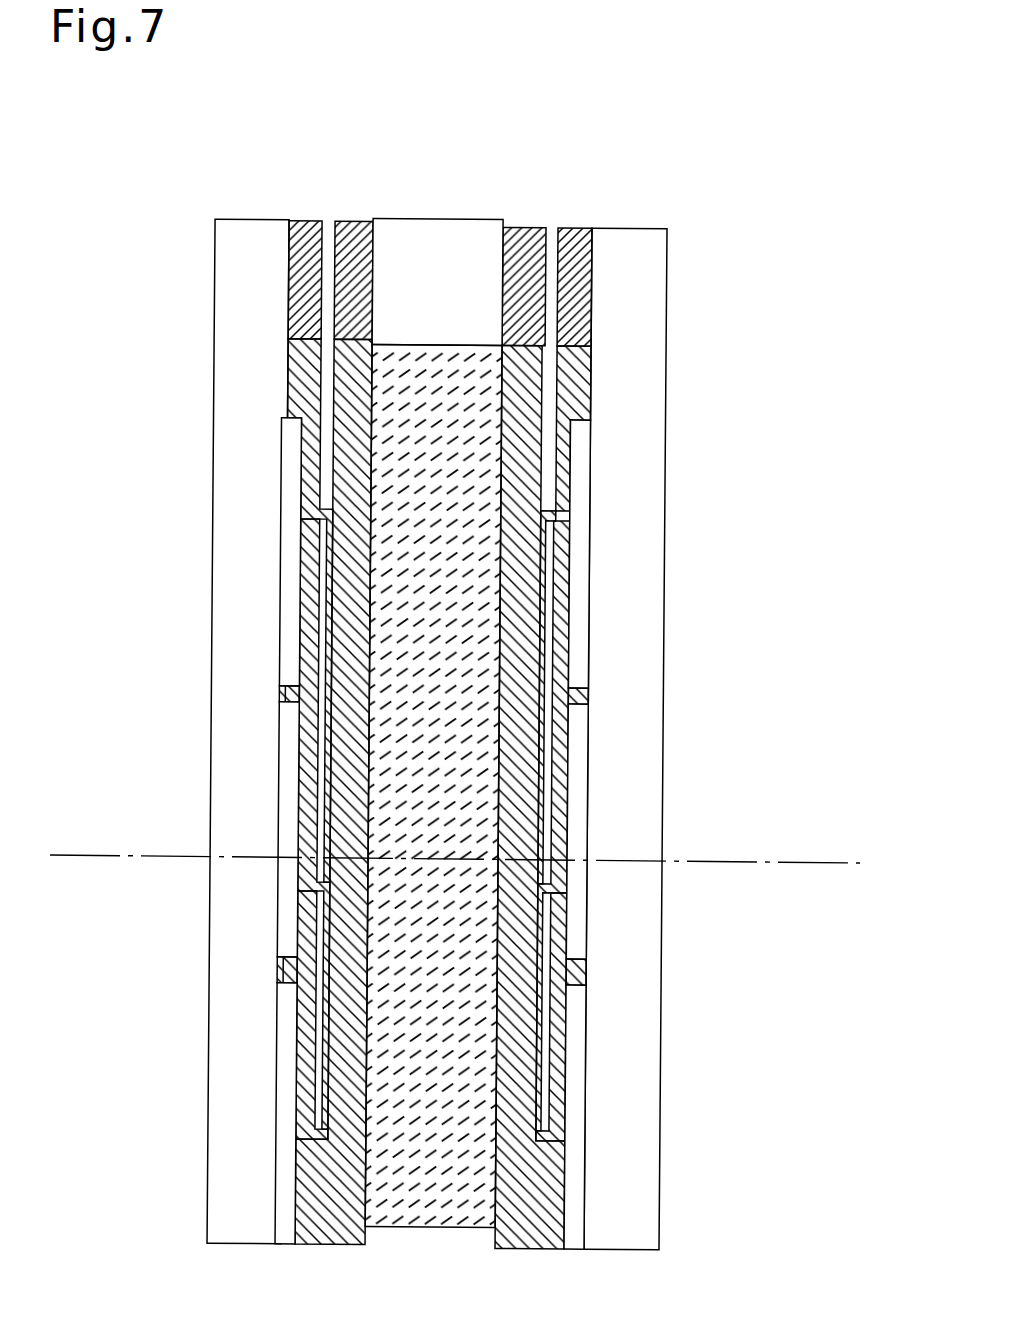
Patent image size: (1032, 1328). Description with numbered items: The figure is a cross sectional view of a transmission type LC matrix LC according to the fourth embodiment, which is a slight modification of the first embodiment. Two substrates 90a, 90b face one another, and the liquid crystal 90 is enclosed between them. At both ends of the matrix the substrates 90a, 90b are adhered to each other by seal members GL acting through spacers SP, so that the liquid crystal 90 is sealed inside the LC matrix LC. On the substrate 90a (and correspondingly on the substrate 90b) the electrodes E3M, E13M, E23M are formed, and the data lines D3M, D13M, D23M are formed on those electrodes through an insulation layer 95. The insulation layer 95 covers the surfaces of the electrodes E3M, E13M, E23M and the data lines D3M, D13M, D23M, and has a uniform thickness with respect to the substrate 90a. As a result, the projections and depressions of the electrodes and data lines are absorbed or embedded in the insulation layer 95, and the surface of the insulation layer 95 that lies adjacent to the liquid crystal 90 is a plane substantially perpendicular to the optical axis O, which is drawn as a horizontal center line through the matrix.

The liquid crystal 90 is at (458, 770).
The substrate 90a is at (260, 317).
The substrate 90b is at (630, 297).
The insulation layer 95 is at (283, 972).
The LC matrix LC is at (672, 132).
The seal member GL is at (357, 222).
The spacer SP is at (455, 262).
The data line D3M is at (327, 422).
The electrode E3M is at (292, 562).
The electrode E13M is at (284, 729).
The data line D13M is at (282, 858).
The electrode E23M is at (282, 1077).
The data line D23M is at (300, 1150).
The optical axis O is at (733, 862).